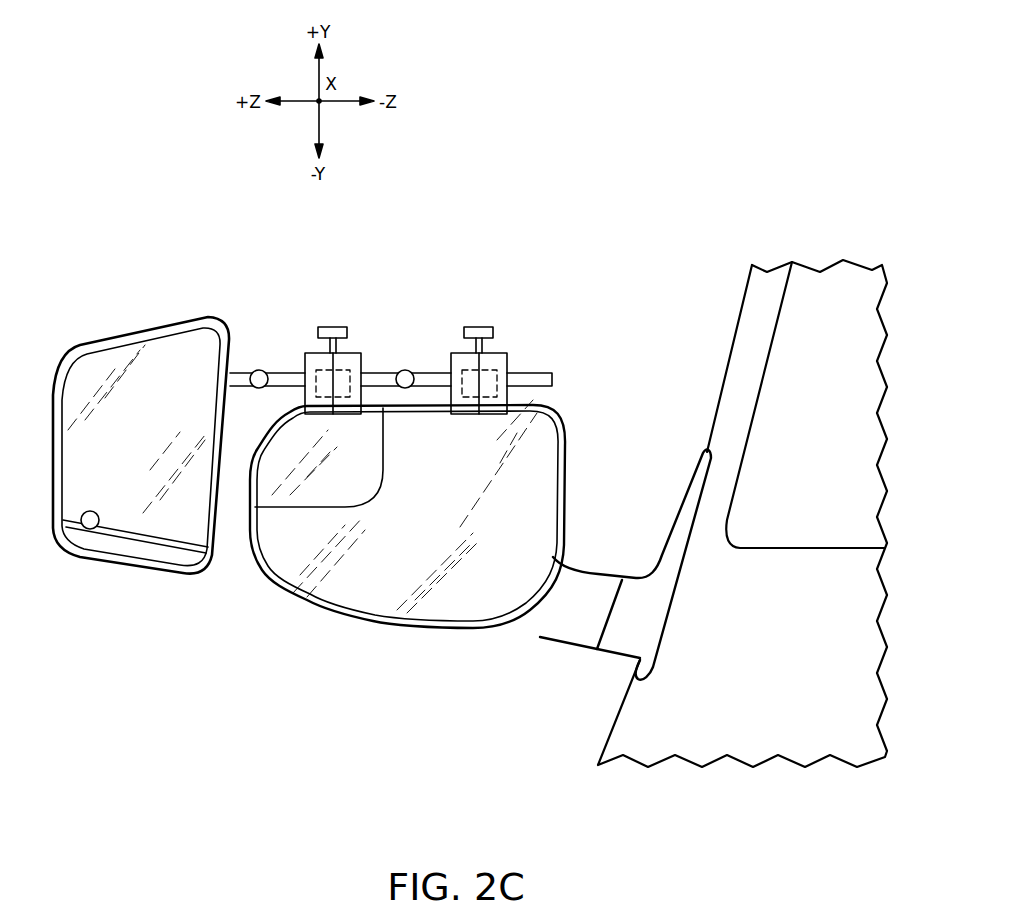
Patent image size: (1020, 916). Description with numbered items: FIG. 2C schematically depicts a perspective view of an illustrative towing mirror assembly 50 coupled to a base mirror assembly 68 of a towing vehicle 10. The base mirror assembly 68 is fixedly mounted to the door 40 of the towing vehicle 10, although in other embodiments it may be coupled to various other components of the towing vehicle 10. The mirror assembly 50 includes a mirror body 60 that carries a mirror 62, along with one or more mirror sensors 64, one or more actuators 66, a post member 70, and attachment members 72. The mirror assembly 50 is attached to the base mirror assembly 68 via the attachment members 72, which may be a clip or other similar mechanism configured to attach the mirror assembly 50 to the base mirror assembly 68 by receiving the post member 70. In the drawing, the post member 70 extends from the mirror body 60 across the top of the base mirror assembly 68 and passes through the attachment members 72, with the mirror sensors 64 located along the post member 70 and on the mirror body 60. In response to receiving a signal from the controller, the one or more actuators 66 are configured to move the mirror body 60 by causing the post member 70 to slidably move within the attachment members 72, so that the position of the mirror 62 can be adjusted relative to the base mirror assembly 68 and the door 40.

The towing vehicle 10 is at (742, 460).
The door 40 is at (737, 365).
The mirror assembly 50 is at (133, 419).
The mirror body 60 is at (173, 568).
The mirror 62 is at (169, 338).
The mirror sensors 64 is at (91, 511).
The actuators 66 is at (340, 402).
The base mirror assembly 68 is at (480, 565).
The post member 70 is at (532, 372).
The attachment members 72 is at (330, 326).